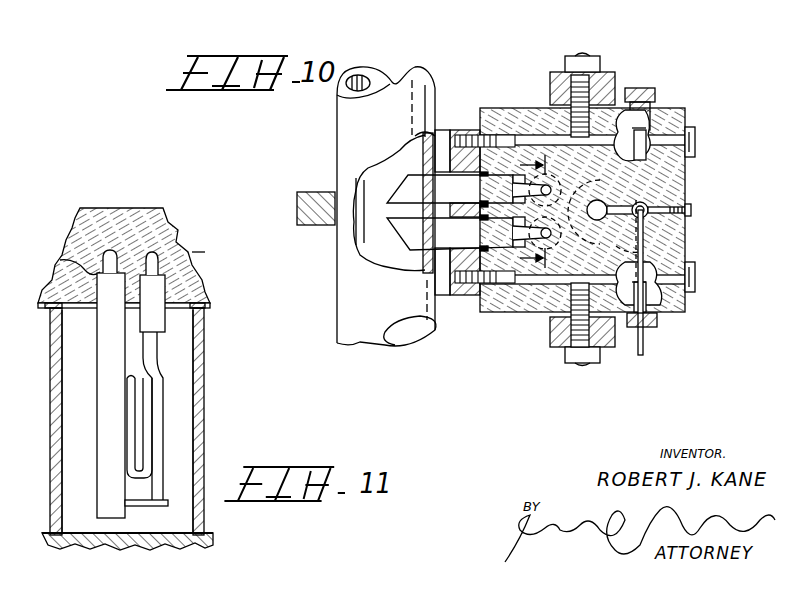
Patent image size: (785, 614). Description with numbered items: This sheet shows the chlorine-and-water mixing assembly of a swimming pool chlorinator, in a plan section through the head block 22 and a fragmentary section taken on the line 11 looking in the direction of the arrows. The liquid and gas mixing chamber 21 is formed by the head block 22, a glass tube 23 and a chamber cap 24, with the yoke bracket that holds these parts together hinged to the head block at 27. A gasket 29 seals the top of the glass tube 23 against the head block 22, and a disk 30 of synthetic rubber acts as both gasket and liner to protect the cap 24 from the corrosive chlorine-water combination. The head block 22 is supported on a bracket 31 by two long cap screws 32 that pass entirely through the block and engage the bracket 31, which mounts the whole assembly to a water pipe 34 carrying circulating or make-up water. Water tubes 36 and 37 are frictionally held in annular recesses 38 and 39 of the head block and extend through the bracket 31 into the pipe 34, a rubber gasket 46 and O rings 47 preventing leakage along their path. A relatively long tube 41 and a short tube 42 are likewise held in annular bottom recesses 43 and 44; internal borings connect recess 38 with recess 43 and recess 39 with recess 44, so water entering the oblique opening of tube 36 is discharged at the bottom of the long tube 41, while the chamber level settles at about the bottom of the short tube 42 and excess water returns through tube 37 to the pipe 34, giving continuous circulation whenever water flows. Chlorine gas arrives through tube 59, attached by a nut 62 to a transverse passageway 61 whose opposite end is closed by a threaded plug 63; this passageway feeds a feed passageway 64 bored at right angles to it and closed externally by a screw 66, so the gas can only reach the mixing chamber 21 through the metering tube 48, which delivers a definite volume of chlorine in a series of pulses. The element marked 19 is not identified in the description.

In FIG. 10, the section line 11 is at (532, 212).
In FIG. 11, the bottom plate 19 is at (140, 507).
In FIG. 11, the liquid and gas mixing chamber 21 is at (180, 412).
In FIG. 10, the head block 22 is at (690, 240).
In FIG. 11, the head block 22 is at (182, 232).
In FIG. 11, the glass tube 23 is at (202, 452).
In FIG. 11, the chamber cap 24 is at (88, 540).
In FIG. 10, the hinge 27 is at (598, 60).
In FIG. 11, the gasket 29 is at (50, 308).
In FIG. 11, the disk 30 is at (212, 535).
In FIG. 10, the bracket 31 is at (465, 290).
In FIG. 10, the cap screws 32 is at (696, 140).
In FIG. 10, the water pipe 34 is at (374, 335).
In FIG. 10, the tube 36 is at (400, 238).
In FIG. 10, the tube 37 is at (404, 190).
In FIG. 10, the annular recess 38 is at (516, 232).
In FIG. 10, the annular recess 39 is at (540, 188).
In FIG. 11, the long tube 41 is at (105, 355).
In FIG. 11, the short tube 42 is at (158, 332).
In FIG. 11, the annular bottom recess 43 is at (60, 260).
In FIG. 11, the annular bottom recess 44 is at (195, 254).
In FIG. 10, the rubber gasket 46 is at (432, 140).
In FIG. 10, the O rings 47 is at (482, 190).
In FIG. 11, the metering tube 48 is at (165, 382).
In FIG. 10, the tube 59 is at (645, 355).
In FIG. 10, the transverse passageway 61 is at (638, 148).
In FIG. 10, the attaching nut 62 is at (652, 325).
In FIG. 10, the threaded plug 63 is at (652, 96).
In FIG. 10, the feed passageway 64 is at (618, 216).
In FIG. 10, the screw 66 is at (692, 210).